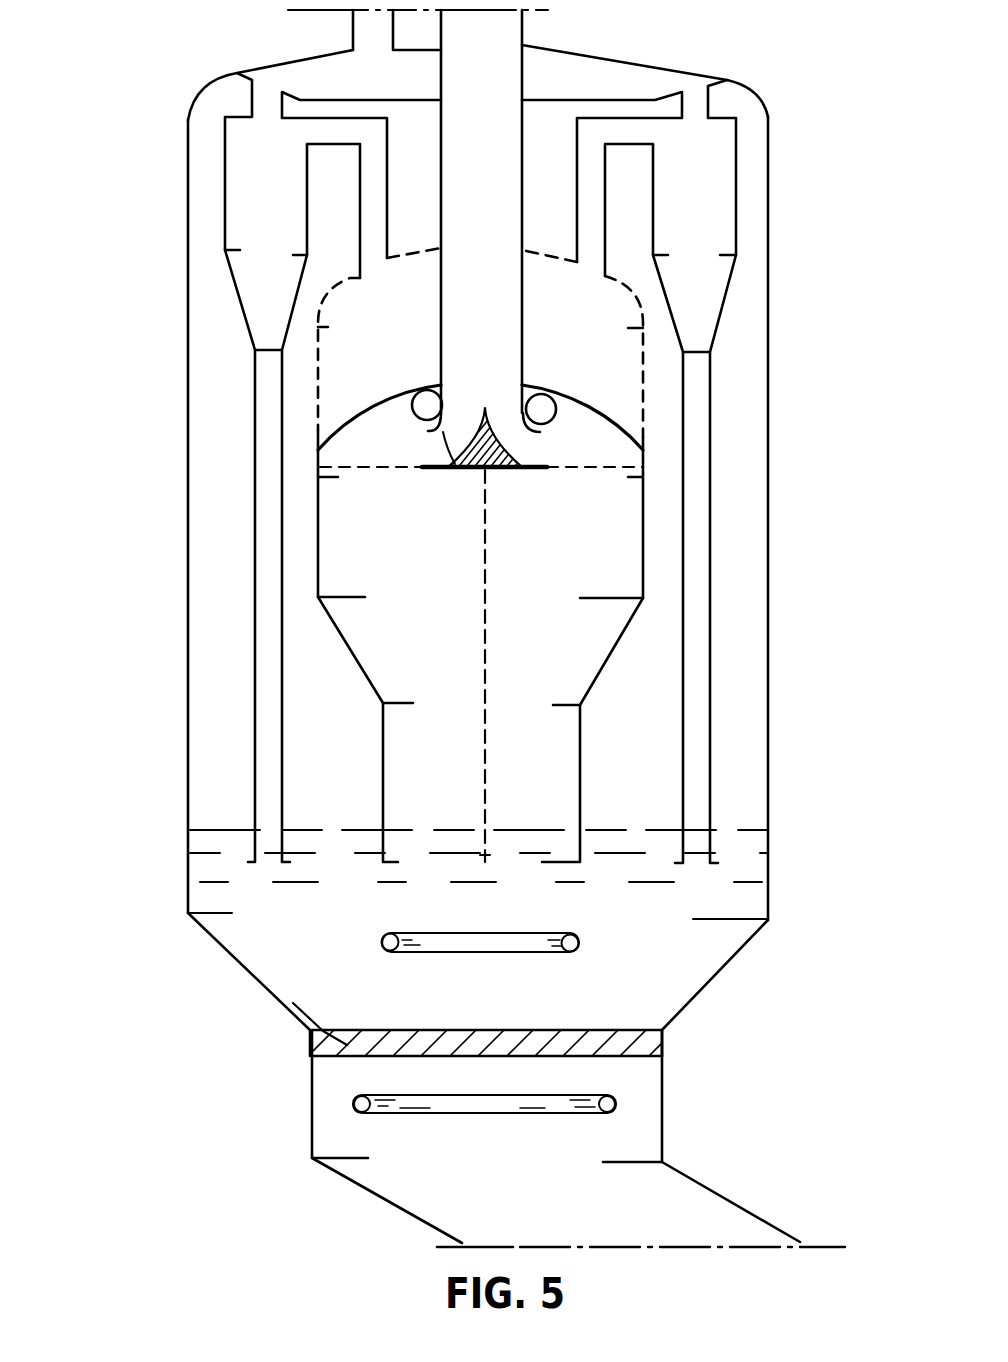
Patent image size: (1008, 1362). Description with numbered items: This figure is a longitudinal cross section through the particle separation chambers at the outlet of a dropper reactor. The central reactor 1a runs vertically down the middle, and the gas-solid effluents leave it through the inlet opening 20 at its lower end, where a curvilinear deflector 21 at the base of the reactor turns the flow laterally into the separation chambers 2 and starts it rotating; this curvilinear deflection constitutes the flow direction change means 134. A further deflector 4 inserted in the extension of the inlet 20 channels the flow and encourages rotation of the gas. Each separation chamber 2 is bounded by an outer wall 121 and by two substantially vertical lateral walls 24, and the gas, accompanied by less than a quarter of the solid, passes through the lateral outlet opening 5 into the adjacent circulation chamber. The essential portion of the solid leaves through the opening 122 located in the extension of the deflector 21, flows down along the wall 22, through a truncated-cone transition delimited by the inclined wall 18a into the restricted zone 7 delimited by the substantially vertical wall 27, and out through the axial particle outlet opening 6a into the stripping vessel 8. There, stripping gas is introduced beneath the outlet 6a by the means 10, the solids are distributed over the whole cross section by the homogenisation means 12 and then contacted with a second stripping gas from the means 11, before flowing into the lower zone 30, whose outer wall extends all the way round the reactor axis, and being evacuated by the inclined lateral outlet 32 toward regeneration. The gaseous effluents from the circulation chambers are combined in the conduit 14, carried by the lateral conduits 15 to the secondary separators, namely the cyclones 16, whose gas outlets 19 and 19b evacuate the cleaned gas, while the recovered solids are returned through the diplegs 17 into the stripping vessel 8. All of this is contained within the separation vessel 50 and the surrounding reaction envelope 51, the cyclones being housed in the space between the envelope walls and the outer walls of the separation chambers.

The central feed tube 1a is at (500, 97).
The separation chamber 2 is at (570, 589).
The deflector 4 is at (433, 430).
The lateral outlet opening 5 is at (542, 400).
The particle outlet opening 6a is at (505, 871).
The zone 7 is at (537, 825).
The stripping vessel 8 is at (265, 960).
The gas introduction means 10 is at (587, 923).
The principal stripping means 11 is at (371, 1130).
The distribution means 12 is at (287, 1002).
The evacuation conduit 14 is at (377, 235).
The conduit 15 is at (337, 132).
The cyclone 16 is at (275, 199).
The dipleg 17 is at (258, 575).
The inclined wall 18a is at (357, 650).
The gaseous effluent outlet 19 is at (265, 90).
The outlet 19b is at (375, 38).
The inlet opening 20 is at (455, 468).
The deflector 21 is at (513, 470).
The outer wall 22 is at (319, 537).
The lateral wall 24 is at (577, 633).
The vertical wall 27 is at (387, 770).
The stripping zone 30 is at (647, 1097).
The outlet 32 is at (712, 1210).
The separation vessel 50 is at (657, 526).
The reaction envelope 51 is at (167, 602).
The outer wall 121 is at (391, 388).
The outlet 122 is at (608, 470).
The flow direction change means 134 is at (431, 475).